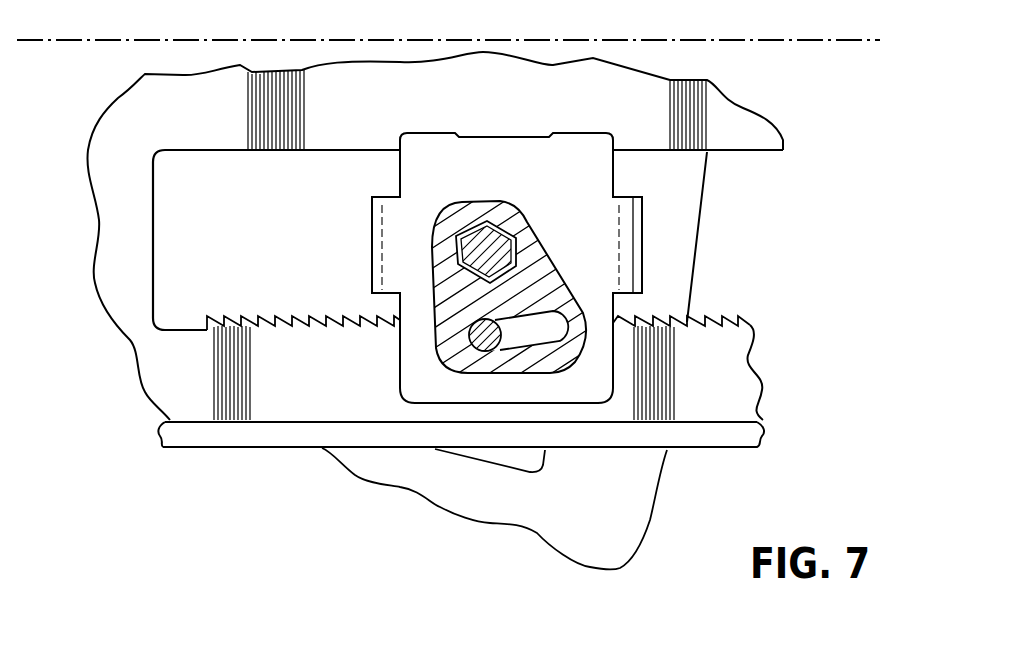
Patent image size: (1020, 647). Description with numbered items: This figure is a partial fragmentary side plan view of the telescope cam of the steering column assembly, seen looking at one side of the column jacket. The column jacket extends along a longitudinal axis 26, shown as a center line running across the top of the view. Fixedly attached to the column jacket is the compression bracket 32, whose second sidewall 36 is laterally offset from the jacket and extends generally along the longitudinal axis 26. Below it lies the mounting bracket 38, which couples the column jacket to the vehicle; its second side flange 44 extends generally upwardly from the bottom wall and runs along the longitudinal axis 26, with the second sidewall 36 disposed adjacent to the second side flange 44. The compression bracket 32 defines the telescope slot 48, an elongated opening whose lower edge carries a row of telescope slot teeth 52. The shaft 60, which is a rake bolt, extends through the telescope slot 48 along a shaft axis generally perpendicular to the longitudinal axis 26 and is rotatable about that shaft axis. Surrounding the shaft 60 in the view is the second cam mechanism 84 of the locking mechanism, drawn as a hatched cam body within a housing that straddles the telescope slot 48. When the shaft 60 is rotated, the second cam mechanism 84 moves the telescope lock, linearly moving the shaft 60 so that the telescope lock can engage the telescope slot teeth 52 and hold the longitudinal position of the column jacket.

The longitudinal axis 26 is at (35, 40).
The compression bracket 32 is at (640, 95).
The second sidewall 36 is at (390, 93).
The mounting bracket 38 is at (640, 475).
The second side flange 44 is at (492, 495).
The telescope slot 48 is at (205, 152).
The telescope slot teeth 52 is at (232, 316).
The shaft 60 is at (493, 250).
The second cam mechanism 84 is at (432, 346).